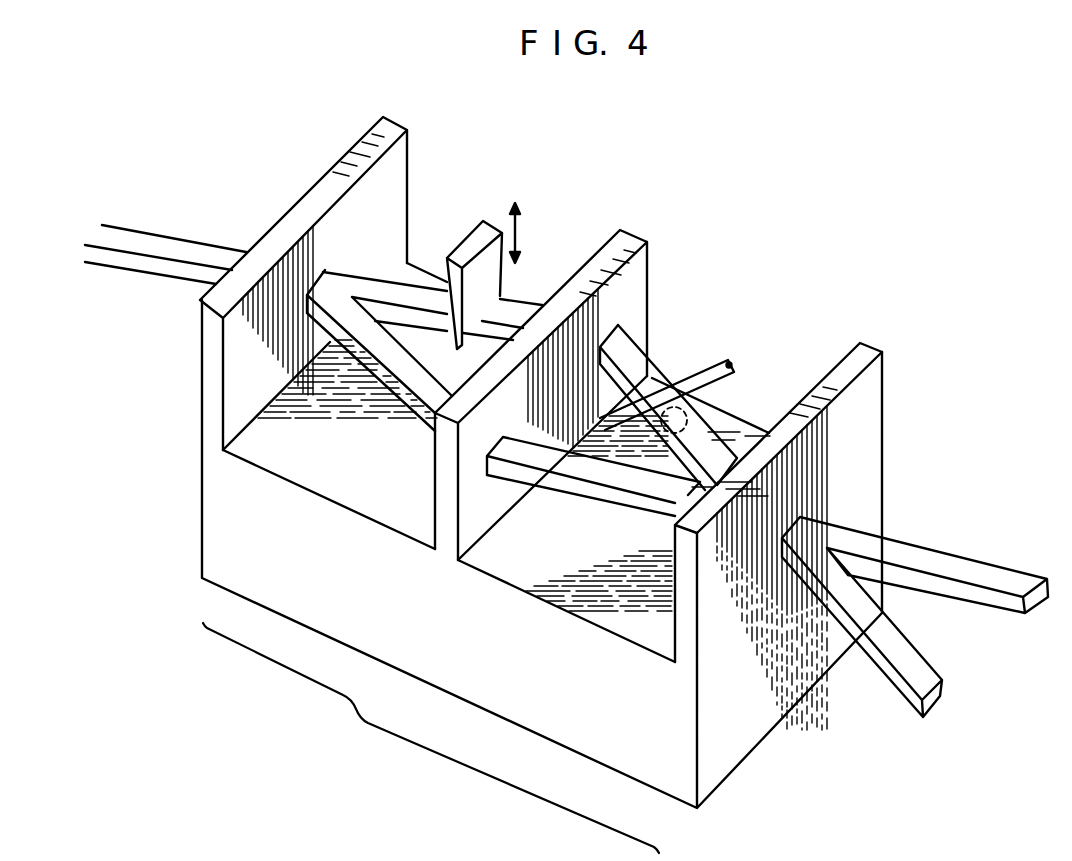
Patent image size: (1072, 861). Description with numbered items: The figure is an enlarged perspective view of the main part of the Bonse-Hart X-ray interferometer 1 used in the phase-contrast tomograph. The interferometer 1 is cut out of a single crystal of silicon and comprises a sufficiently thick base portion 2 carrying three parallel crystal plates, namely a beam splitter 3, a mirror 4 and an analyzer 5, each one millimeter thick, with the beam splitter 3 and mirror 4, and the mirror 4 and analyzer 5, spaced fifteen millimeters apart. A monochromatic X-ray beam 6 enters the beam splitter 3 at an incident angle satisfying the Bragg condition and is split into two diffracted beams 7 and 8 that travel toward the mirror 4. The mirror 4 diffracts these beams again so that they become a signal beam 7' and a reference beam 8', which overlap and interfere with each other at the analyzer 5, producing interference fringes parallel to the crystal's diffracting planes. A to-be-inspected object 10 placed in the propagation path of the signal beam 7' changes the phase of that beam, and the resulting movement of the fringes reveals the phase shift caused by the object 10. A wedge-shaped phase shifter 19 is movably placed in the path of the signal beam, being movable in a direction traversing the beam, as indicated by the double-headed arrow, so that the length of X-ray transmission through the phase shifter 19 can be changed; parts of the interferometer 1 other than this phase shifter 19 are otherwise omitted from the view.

The Bonse-Hart X-ray interferometer 1 is at (431, 738).
The base portion 2 is at (542, 535).
The beam splitter 3 is at (388, 128).
The mirror 4 is at (624, 243).
The analyzer 5 is at (863, 348).
The rod 6 is at (158, 242).
The diffracted beam 7 is at (424, 318).
The signal beam 7' is at (691, 407).
The diffracted beam 8 is at (347, 381).
The reference beam 8' is at (593, 498).
The to-be-inspected object 10 is at (678, 404).
The phase shifter 19 is at (489, 233).